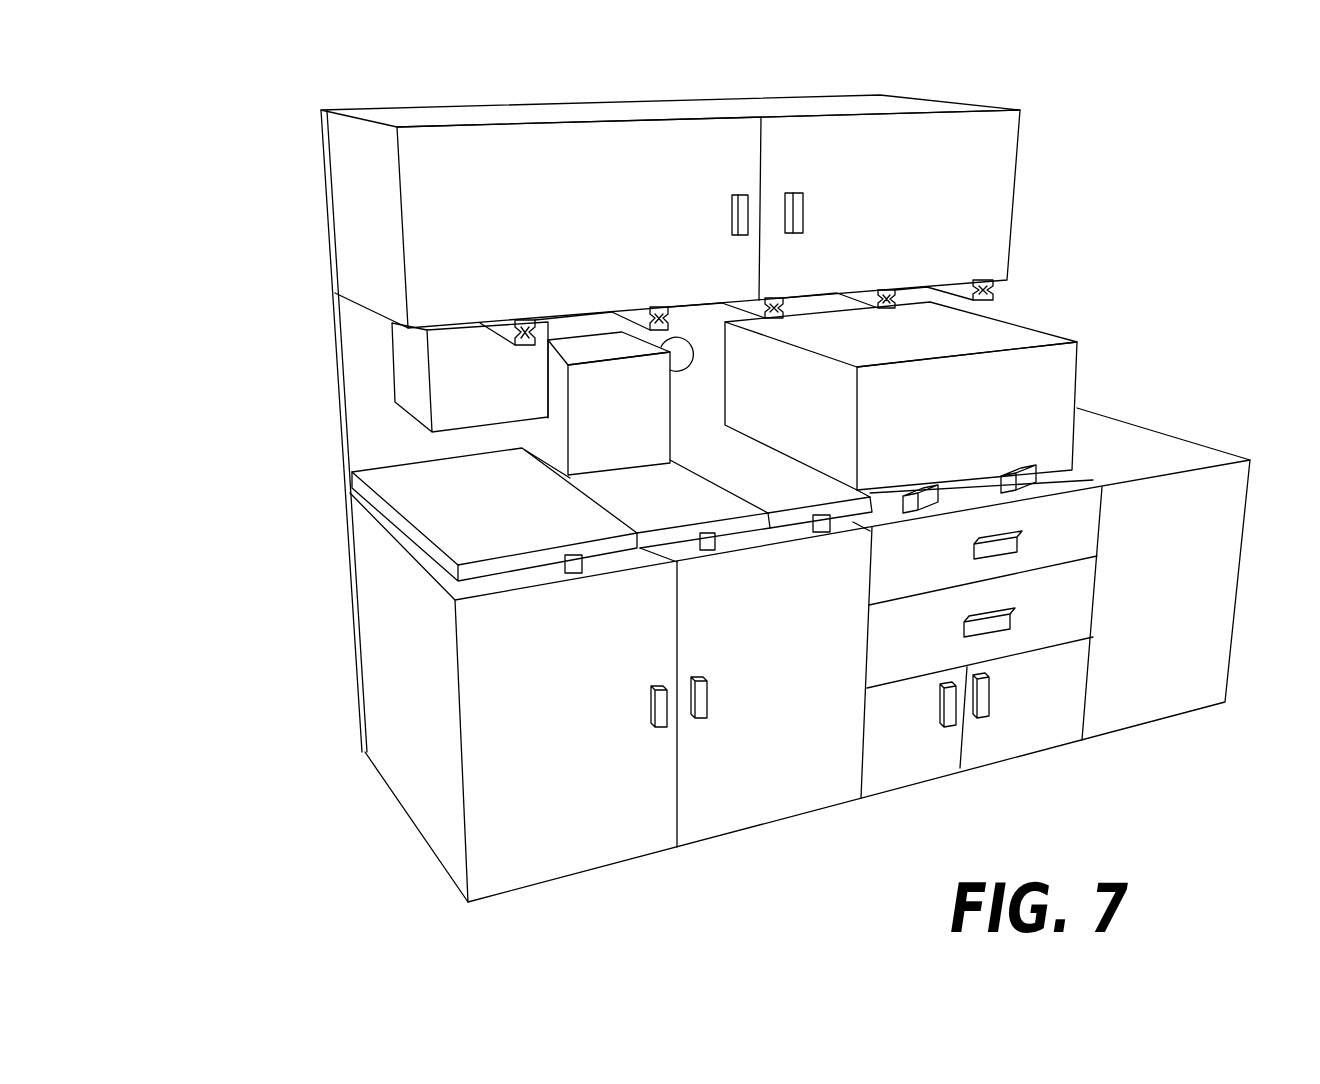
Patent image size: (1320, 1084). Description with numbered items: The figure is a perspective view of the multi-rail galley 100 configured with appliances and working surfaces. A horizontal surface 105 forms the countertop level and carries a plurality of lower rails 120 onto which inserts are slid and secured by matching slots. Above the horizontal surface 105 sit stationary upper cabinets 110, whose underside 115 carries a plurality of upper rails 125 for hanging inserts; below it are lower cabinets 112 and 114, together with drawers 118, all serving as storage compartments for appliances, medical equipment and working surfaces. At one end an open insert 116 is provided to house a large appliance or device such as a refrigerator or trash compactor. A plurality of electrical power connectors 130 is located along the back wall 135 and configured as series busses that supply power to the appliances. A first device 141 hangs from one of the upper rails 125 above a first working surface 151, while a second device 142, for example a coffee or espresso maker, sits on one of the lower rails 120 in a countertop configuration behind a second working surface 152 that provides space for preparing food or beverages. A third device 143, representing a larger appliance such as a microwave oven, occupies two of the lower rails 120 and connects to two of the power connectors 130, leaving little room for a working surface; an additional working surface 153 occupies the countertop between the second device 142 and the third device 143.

The multi-rail galley 100 is at (238, 127).
The horizontal surface 105 is at (1150, 459).
The upper cabinets 110 is at (467, 148).
The lower cabinet 112 is at (713, 825).
The lower cabinet 114 is at (1023, 740).
The underside of upper cabinets 115 is at (366, 320).
The open insert 116 is at (1153, 702).
The drawers 118 is at (1085, 535).
The lower rails 120 is at (573, 574).
The upper rails 125 is at (522, 319).
The electrical power connectors 130 is at (686, 362).
The back wall 135 is at (365, 427).
The first device 141 is at (505, 393).
The second device 142 is at (637, 427).
The third device 143 is at (977, 426).
The first working surface 151 is at (507, 518).
The second working surface 152 is at (672, 509).
The third working surface 153 is at (763, 476).